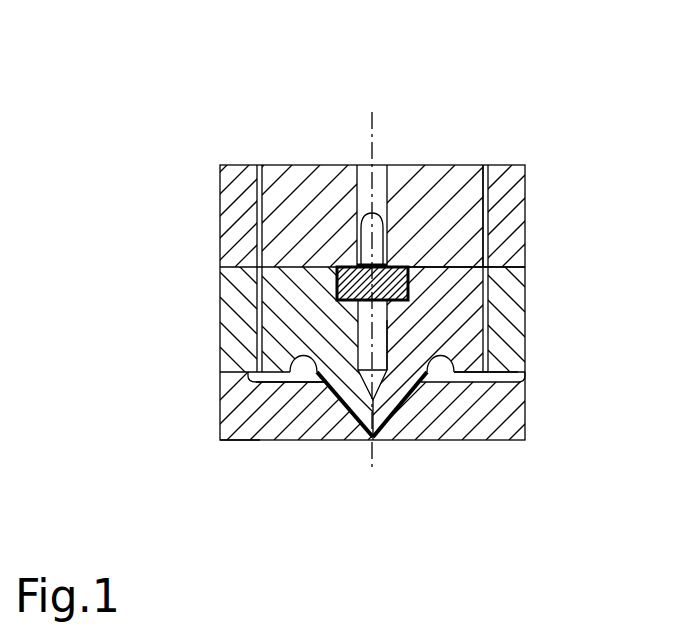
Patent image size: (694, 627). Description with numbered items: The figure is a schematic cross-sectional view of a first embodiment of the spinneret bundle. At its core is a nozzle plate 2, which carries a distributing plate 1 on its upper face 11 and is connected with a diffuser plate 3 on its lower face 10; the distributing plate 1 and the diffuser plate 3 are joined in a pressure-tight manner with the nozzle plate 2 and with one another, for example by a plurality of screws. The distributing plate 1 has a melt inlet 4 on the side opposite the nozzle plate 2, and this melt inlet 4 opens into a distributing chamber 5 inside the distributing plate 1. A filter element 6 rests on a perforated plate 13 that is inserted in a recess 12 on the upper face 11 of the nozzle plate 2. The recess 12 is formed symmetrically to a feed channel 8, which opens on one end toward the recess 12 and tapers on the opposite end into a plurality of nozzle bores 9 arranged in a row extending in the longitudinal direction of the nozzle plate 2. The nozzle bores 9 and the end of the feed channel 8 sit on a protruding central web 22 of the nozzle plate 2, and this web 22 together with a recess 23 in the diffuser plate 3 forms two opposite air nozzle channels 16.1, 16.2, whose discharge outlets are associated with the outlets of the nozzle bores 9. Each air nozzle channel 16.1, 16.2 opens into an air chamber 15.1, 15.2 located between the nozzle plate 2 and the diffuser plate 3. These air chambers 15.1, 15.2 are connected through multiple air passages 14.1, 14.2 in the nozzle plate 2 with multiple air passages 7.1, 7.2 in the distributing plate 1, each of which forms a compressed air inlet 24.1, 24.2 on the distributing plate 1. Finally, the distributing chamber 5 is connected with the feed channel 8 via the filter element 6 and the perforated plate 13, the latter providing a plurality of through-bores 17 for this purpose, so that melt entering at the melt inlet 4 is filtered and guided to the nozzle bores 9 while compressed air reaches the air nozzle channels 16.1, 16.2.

The distributing plate 1 is at (438, 176).
The nozzle plate 2 is at (460, 322).
The diffuser plate 3 is at (512, 385).
The melt inlet 4 is at (363, 165).
The distributing chamber 5 is at (395, 172).
The filter element 6 is at (497, 200).
The air passage 7.1 is at (500, 197).
The air passage 7.2 is at (255, 200).
The feed channel 8 is at (415, 328).
The nozzle bores 9 is at (380, 440).
The lower face 10 is at (520, 398).
The upper face 11 is at (517, 255).
The recess 12 is at (245, 335).
The perforated plate 13 is at (527, 282).
The air passage 14.1 is at (490, 300).
The air passage 14.2 is at (262, 315).
The air chamber 15.1 is at (440, 380).
The air chamber 15.2 is at (263, 383).
The air nozzle channel 16.1 is at (420, 387).
The air nozzle channel 16.2 is at (350, 408).
The through-bores 17 is at (337, 290).
The web 22 is at (243, 423).
The recess 23 is at (347, 385).
The compressed air inlet 24.1 is at (488, 180).
The compressed air inlet 24.2 is at (260, 165).